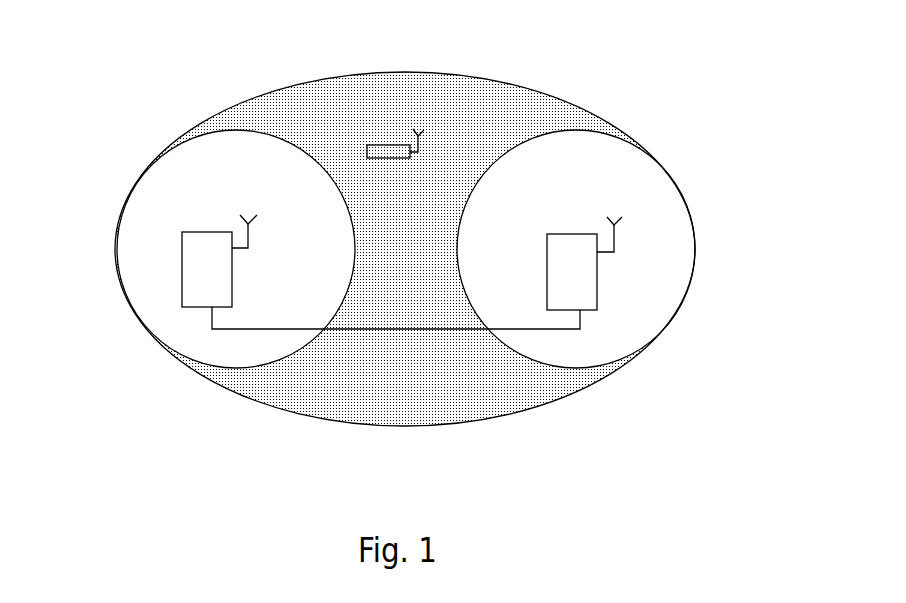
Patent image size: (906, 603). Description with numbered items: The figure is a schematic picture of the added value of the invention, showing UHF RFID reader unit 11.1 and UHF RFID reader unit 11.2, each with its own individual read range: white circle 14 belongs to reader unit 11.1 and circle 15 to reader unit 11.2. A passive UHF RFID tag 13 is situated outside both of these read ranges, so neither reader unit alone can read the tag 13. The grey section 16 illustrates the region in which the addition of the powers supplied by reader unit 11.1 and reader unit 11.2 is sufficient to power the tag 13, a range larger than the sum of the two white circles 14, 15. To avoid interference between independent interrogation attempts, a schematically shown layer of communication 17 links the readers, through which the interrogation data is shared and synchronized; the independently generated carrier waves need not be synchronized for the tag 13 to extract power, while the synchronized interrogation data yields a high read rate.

The grey section 16 is at (507, 102).
The white circle 14 is at (213, 180).
The circle 15 is at (650, 182).
The UHF RFID reader unit 11.1 is at (207, 266).
The UHF RFID reader unit 11.2 is at (573, 274).
The passive UHF RFID tag 13 is at (387, 145).
The layer of communication 17 is at (430, 333).